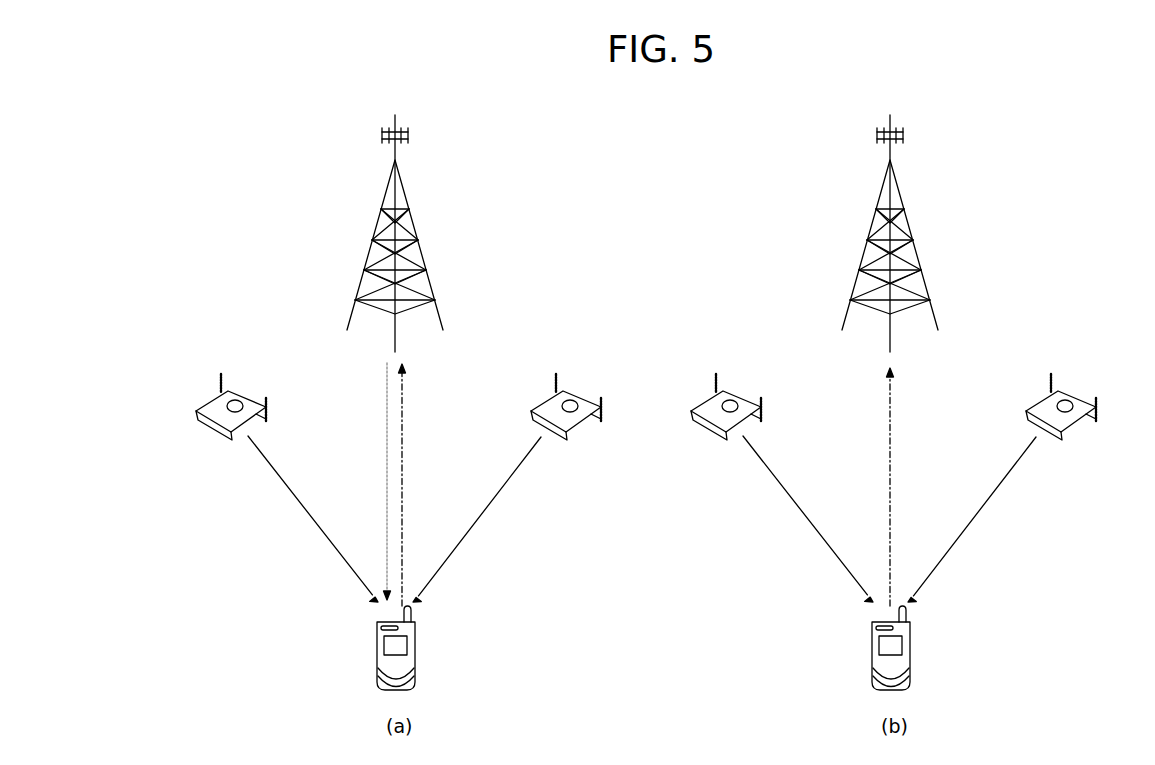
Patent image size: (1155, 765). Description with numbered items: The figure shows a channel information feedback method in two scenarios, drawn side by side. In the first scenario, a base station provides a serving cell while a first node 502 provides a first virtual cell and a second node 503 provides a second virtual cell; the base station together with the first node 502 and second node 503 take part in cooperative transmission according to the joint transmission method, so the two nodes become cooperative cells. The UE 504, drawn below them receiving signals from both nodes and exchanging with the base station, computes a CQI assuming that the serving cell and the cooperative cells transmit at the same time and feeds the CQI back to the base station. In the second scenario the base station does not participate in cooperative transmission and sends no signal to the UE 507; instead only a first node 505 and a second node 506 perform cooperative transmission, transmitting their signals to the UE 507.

The node 1 502 is at (248, 394).
The node 2 503 is at (583, 394).
The UE 504 is at (415, 653).
The node 1 505 is at (743, 394).
The node 2 506 is at (1078, 394).
The UE 507 is at (910, 653).